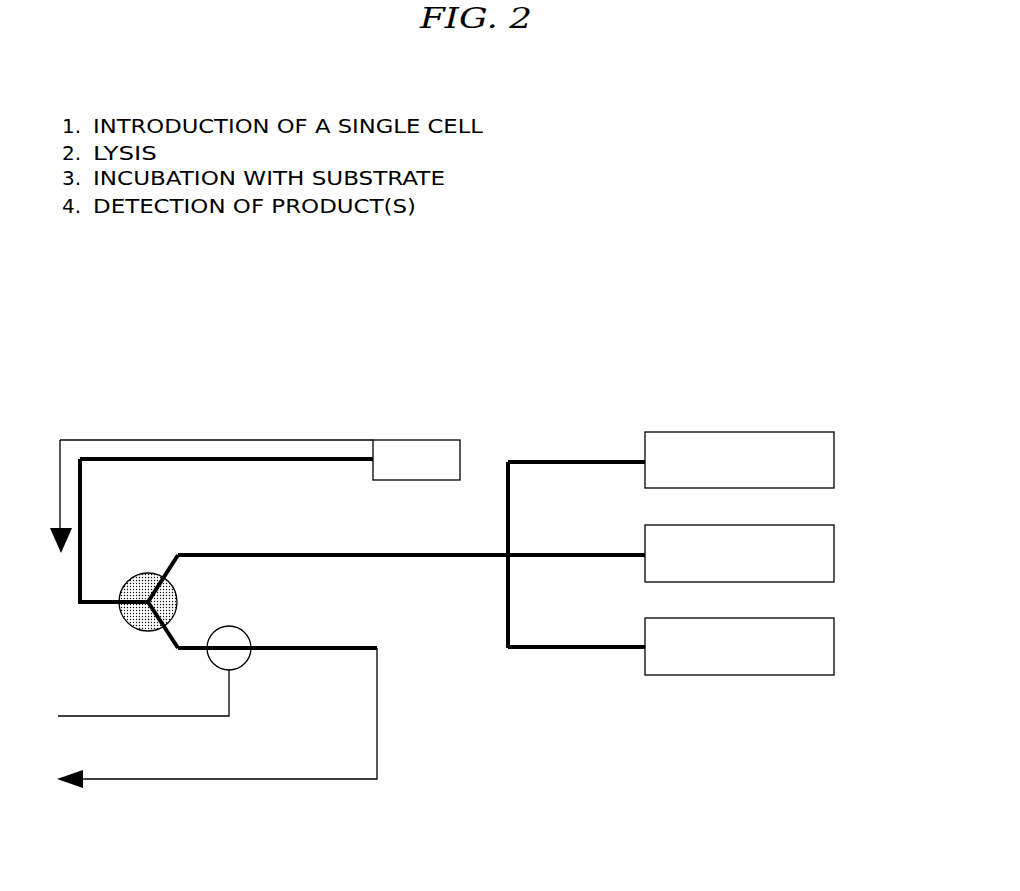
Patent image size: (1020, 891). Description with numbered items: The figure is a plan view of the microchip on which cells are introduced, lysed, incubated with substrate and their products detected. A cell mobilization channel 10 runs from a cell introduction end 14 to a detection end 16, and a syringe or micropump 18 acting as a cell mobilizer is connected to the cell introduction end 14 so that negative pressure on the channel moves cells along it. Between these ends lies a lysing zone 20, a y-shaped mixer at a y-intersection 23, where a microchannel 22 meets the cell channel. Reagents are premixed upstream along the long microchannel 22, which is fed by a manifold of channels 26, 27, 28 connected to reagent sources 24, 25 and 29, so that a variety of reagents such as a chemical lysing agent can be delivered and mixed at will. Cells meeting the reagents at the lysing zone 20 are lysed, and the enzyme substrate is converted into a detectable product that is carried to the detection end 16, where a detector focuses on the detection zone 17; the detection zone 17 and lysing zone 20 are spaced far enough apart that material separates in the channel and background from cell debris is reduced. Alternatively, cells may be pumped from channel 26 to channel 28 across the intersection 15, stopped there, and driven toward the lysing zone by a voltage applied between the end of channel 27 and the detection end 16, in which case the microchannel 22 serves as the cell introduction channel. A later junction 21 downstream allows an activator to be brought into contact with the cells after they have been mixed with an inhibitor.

The cell mobilization channel 10 is at (78, 568).
The cell introduction end 14 is at (287, 461).
The intersection 15 is at (505, 557).
The detection end 16 is at (310, 648).
The detection zone 17 is at (246, 665).
The syringe or micropump 18 is at (432, 440).
The lysing zone 20 is at (148, 573).
The later junction 21 is at (175, 638).
The microchannel 22 is at (380, 555).
The y-intersection 23 is at (135, 627).
The reagent source 24 is at (706, 432).
The reagent source 25 is at (836, 553).
The channel 26 is at (556, 462).
The channel 27 is at (556, 554).
The channel 28 is at (558, 647).
The reagent source 29 is at (836, 645).